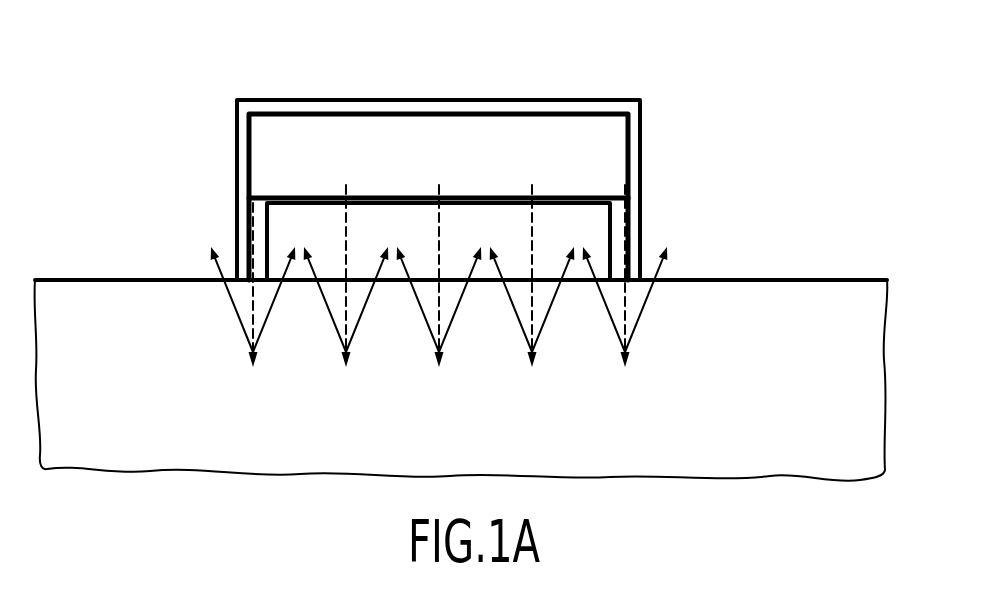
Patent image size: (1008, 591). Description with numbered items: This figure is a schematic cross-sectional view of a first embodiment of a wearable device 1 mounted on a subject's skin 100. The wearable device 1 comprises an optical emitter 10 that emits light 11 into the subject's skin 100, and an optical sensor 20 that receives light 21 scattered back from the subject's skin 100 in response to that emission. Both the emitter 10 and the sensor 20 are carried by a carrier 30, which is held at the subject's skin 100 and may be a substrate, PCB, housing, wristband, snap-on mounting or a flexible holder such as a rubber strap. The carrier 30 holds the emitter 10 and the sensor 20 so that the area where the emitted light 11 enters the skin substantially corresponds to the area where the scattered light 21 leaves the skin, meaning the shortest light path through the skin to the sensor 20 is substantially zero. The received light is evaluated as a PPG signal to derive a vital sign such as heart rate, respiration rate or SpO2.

The wearable device 1 is at (764, 85).
The optical emitter 10 is at (263, 145).
The emitted light 11 is at (623, 316).
The optical sensor 20 is at (280, 220).
The scattered light 21 is at (272, 320).
The carrier 30 is at (295, 108).
The subject's skin 100 is at (795, 300).